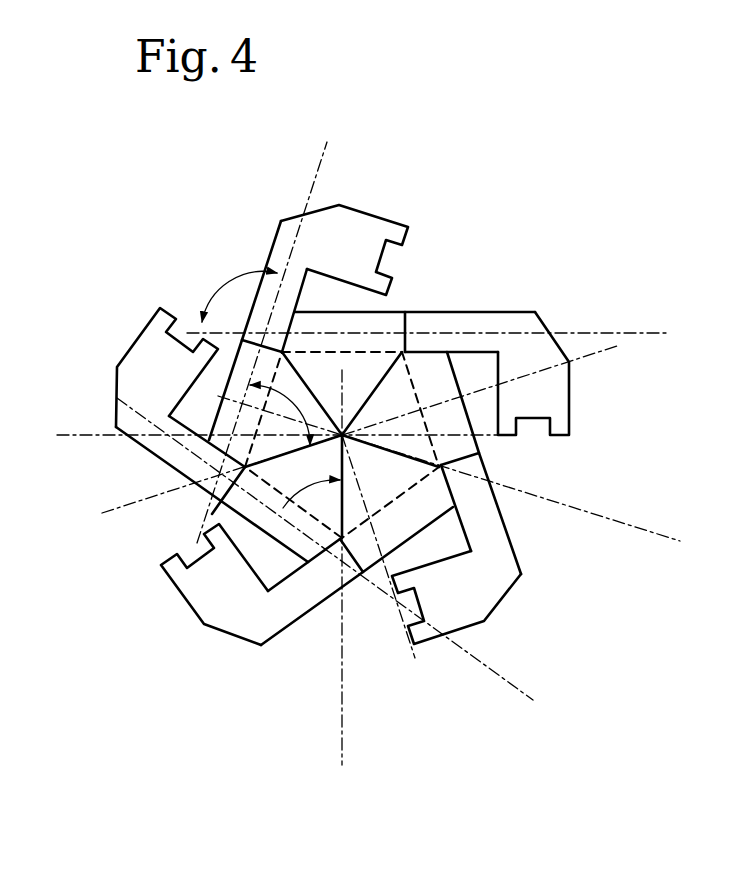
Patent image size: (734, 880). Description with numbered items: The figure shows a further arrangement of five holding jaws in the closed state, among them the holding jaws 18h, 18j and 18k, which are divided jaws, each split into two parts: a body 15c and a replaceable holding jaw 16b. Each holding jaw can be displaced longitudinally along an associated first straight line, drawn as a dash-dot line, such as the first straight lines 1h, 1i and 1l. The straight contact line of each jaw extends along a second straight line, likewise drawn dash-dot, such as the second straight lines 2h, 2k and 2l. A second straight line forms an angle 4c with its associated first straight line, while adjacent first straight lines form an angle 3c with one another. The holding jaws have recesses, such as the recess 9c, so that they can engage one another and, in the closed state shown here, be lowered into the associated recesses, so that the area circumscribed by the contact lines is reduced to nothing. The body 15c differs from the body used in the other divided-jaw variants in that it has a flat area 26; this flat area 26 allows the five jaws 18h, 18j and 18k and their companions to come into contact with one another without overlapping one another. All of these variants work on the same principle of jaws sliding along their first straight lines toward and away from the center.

The first straight line 1h is at (271, 332).
The first straight line 1i is at (439, 335).
The first straight line 1l is at (341, 564).
The second straight line 2h is at (337, 444).
The second straight line 2k is at (467, 477).
The second straight line 2l is at (342, 578).
The angle between adjacent first straight lines 3c is at (230, 298).
The angle between second and first straight lines 4c is at (279, 412).
The recess 9c is at (470, 367).
The body 15c is at (429, 316).
The replaceable holding jaw 16b is at (468, 447).
The holding jaw 18h is at (366, 206).
The holding jaw 18j is at (523, 545).
The holding jaw 18k is at (219, 630).
The flat area 26 is at (214, 453).